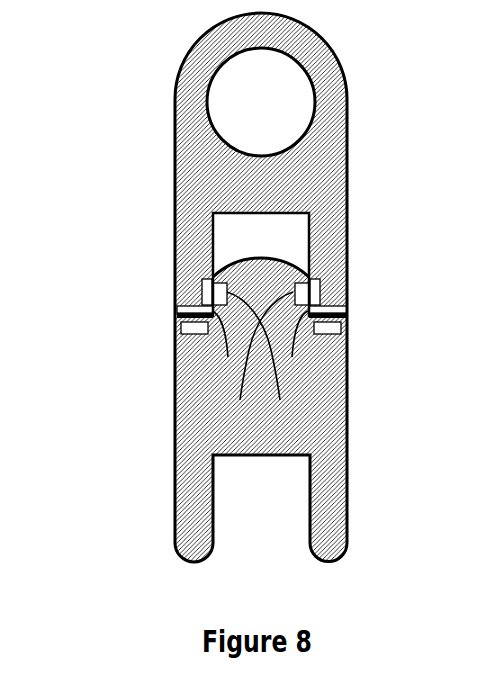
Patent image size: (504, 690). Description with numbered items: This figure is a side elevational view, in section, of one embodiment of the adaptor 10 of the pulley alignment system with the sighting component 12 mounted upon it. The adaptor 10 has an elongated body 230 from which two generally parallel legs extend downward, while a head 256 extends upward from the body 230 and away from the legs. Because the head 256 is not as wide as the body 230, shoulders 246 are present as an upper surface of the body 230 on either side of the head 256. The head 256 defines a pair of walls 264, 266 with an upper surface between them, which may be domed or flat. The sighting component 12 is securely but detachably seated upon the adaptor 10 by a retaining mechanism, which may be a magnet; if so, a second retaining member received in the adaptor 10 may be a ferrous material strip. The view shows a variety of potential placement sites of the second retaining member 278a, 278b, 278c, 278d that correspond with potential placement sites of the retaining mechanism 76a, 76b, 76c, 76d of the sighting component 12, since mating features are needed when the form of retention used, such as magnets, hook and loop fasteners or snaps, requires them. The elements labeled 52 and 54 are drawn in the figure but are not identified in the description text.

The adaptor 10 is at (239, 287).
The sighting component 12 is at (347, 75).
The right arm 52 is at (336, 227).
The left arm 54 is at (185, 247).
The retaining mechanism 76a is at (343, 307).
The retaining mechanism 76b is at (180, 308).
The retaining mechanism 76c is at (320, 279).
The retaining mechanism 76d is at (205, 284).
The elongated body 230 is at (177, 422).
The shoulders 246 is at (177, 317).
The head 256 is at (260, 270).
The wall 264 is at (307, 352).
The wall 266 is at (210, 352).
The second retaining member 278a is at (333, 334).
The second retaining member 278b is at (190, 334).
The second retaining member 278c is at (272, 363).
The second retaining member 278d is at (249, 363).